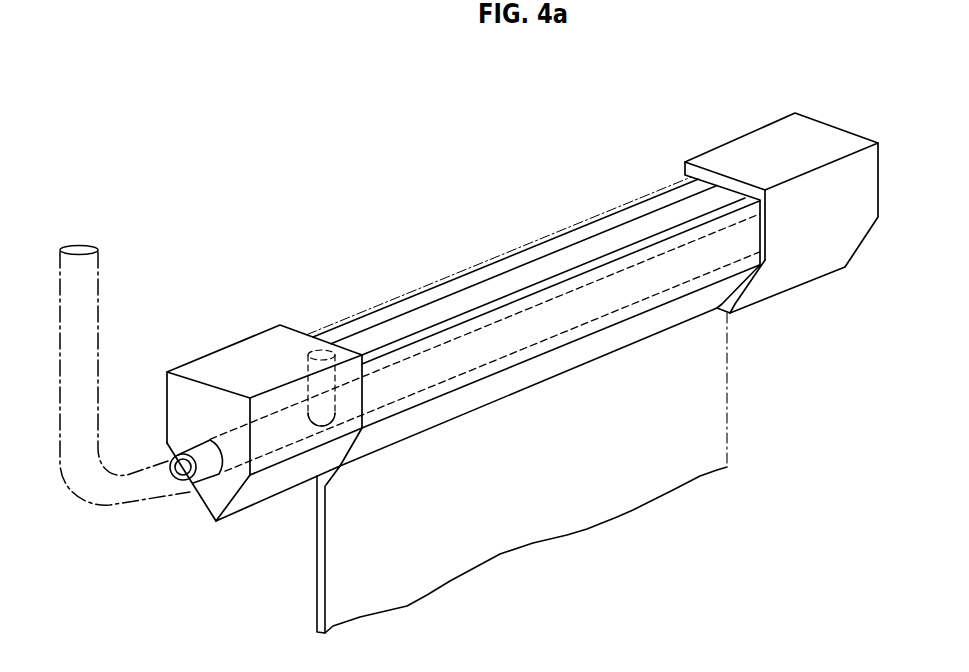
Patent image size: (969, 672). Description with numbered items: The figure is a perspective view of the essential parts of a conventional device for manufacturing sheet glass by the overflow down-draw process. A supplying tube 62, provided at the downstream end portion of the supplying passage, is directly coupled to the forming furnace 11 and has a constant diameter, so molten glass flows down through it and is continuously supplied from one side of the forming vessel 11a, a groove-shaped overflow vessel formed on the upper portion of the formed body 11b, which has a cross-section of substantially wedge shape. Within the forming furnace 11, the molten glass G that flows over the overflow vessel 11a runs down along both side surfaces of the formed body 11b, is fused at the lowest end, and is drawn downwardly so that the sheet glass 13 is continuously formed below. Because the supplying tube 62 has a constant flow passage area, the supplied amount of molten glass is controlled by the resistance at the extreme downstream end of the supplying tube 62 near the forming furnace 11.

The forming furnace 11 is at (510, 308).
The forming vessel 11a is at (593, 247).
The formed body 11b is at (630, 283).
The sheet glass 13 is at (552, 517).
The supplying tube 62 is at (98, 302).
The molten glass G is at (530, 247).